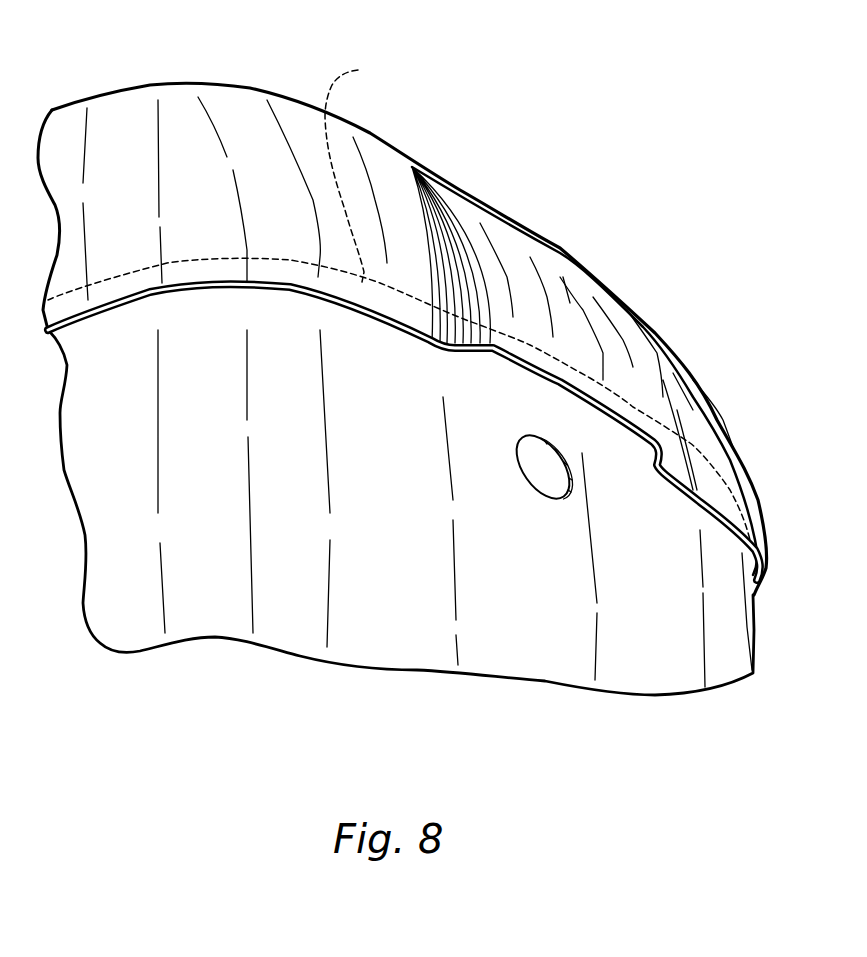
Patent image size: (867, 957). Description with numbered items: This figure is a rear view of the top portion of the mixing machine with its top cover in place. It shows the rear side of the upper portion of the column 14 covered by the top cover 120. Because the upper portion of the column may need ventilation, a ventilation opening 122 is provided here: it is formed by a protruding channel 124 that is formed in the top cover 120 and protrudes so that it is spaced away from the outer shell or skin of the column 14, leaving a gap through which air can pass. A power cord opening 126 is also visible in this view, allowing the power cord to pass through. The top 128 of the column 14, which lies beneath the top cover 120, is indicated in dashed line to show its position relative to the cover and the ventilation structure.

The column 14 is at (650, 630).
The top cover 120 is at (476, 188).
The ventilation opening 122 is at (547, 393).
The protruding channel 124 is at (548, 335).
The power cord opening 126 is at (540, 467).
The top of the column 128 is at (358, 70).